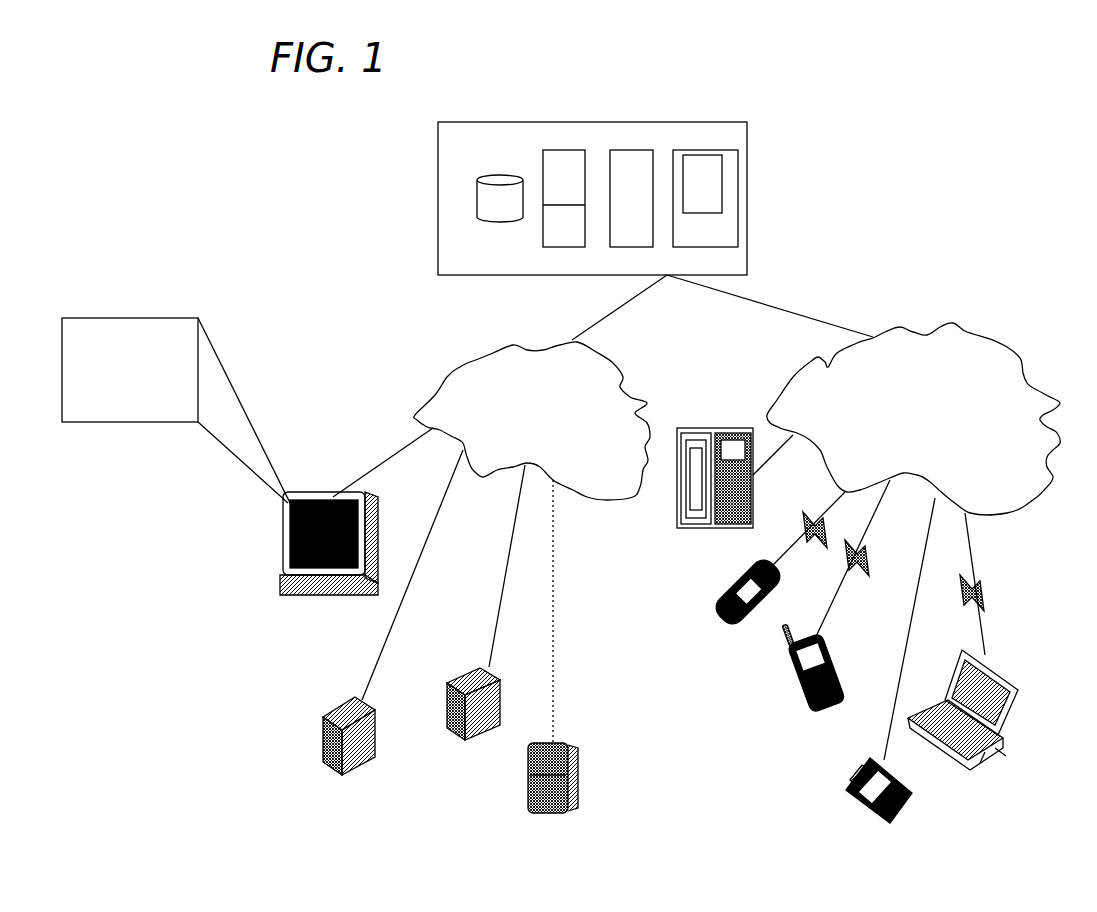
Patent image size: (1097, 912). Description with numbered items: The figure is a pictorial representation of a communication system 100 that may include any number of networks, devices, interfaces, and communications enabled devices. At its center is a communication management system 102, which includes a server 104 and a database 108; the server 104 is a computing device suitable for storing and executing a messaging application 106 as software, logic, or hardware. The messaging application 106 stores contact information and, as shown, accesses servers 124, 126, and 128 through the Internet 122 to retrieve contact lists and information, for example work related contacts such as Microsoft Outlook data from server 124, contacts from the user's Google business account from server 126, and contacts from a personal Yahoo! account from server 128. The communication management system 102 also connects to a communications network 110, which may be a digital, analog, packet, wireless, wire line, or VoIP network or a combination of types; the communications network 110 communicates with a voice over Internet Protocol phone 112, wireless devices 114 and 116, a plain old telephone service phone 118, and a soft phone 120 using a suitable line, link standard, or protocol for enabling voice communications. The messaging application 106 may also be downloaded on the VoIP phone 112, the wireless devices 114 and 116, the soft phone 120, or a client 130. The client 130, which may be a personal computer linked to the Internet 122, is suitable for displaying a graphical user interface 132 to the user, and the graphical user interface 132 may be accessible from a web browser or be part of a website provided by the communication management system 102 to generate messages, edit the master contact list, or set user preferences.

The communication system 100 is at (218, 171).
The communication management system 102 is at (735, 136).
The server 104 is at (700, 233).
The messaging application 106 is at (710, 175).
The database 108 is at (487, 205).
The communications network 110 is at (900, 443).
The voice over Internet Protocol (VoIP) phone 112 is at (700, 484).
The wireless device 114 is at (730, 592).
The wireless device 116 is at (802, 663).
The plain old telephone service (POTS) phone 118 is at (876, 815).
The soft phone 120 is at (984, 710).
The Internet 122 is at (522, 440).
The server 124 is at (579, 788).
The server 126 is at (473, 724).
The server 128 is at (349, 752).
The client 130 is at (280, 577).
The graphical user interface (GUI) 132 is at (117, 414).